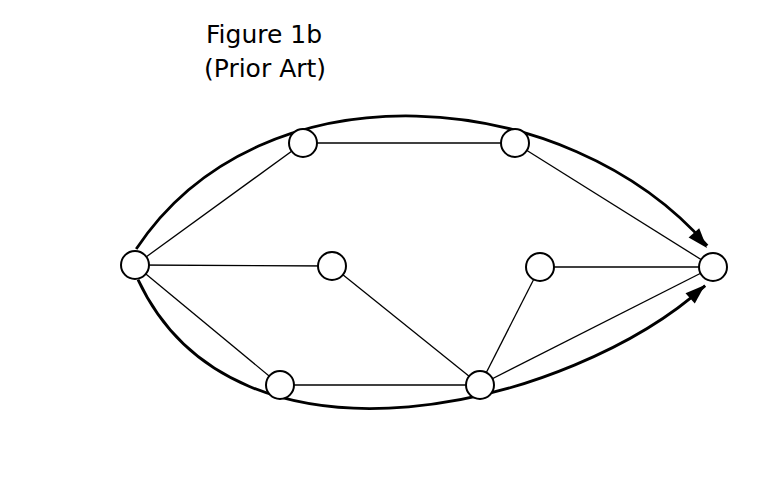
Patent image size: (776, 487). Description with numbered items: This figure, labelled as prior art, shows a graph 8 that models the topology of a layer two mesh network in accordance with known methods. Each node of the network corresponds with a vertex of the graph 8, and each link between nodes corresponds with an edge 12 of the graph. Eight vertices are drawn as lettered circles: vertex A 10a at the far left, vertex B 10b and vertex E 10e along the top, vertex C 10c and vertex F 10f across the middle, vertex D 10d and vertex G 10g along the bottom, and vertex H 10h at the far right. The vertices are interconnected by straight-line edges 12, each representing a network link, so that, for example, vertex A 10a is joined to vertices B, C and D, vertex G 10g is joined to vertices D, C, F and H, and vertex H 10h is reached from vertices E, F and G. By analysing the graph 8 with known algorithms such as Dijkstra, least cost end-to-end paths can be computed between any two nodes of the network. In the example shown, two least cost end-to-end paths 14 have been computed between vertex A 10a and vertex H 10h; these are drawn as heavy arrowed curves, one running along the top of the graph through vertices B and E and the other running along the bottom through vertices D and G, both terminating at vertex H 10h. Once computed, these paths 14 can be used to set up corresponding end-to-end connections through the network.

The graph 8 is at (608, 115).
The vertex A 10a is at (126, 252).
The vertex B 10b is at (308, 158).
The vertex C 10c is at (326, 253).
The vertex D 10d is at (290, 372).
The vertex E 10e is at (511, 158).
The vertex F 10f is at (536, 254).
The vertex G 10g is at (493, 396).
The vertex H 10h is at (717, 252).
The edge 12 is at (218, 206).
The least cost end-to-end path 14 is at (230, 163).